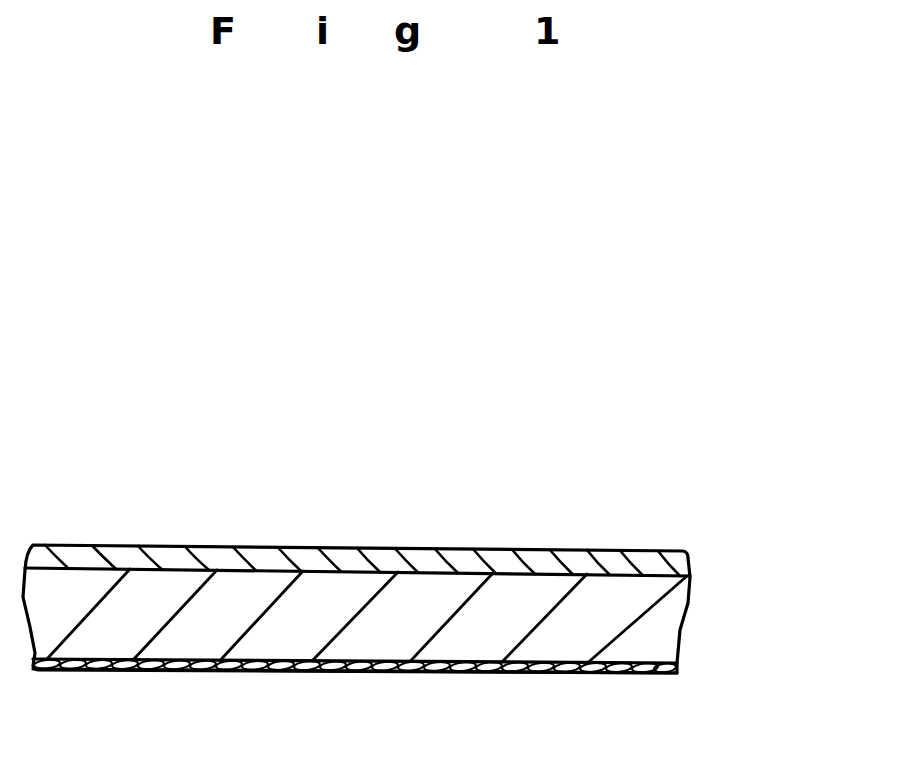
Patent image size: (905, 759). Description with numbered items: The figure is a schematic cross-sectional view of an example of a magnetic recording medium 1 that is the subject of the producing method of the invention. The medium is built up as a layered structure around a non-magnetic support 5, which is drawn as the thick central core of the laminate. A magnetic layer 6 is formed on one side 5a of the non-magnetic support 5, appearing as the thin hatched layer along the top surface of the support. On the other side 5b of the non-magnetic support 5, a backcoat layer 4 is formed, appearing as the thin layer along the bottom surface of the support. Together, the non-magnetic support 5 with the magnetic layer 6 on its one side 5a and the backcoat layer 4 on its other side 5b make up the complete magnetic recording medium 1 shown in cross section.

The magnetic recording medium 1 is at (737, 420).
The backcoat layer 4 is at (633, 677).
The non-magnetic support 5 is at (663, 632).
The one side of the non-magnetic support 5a is at (690, 567).
The other side of the non-magnetic support 5b is at (660, 675).
The magnetic layer 6 is at (676, 552).